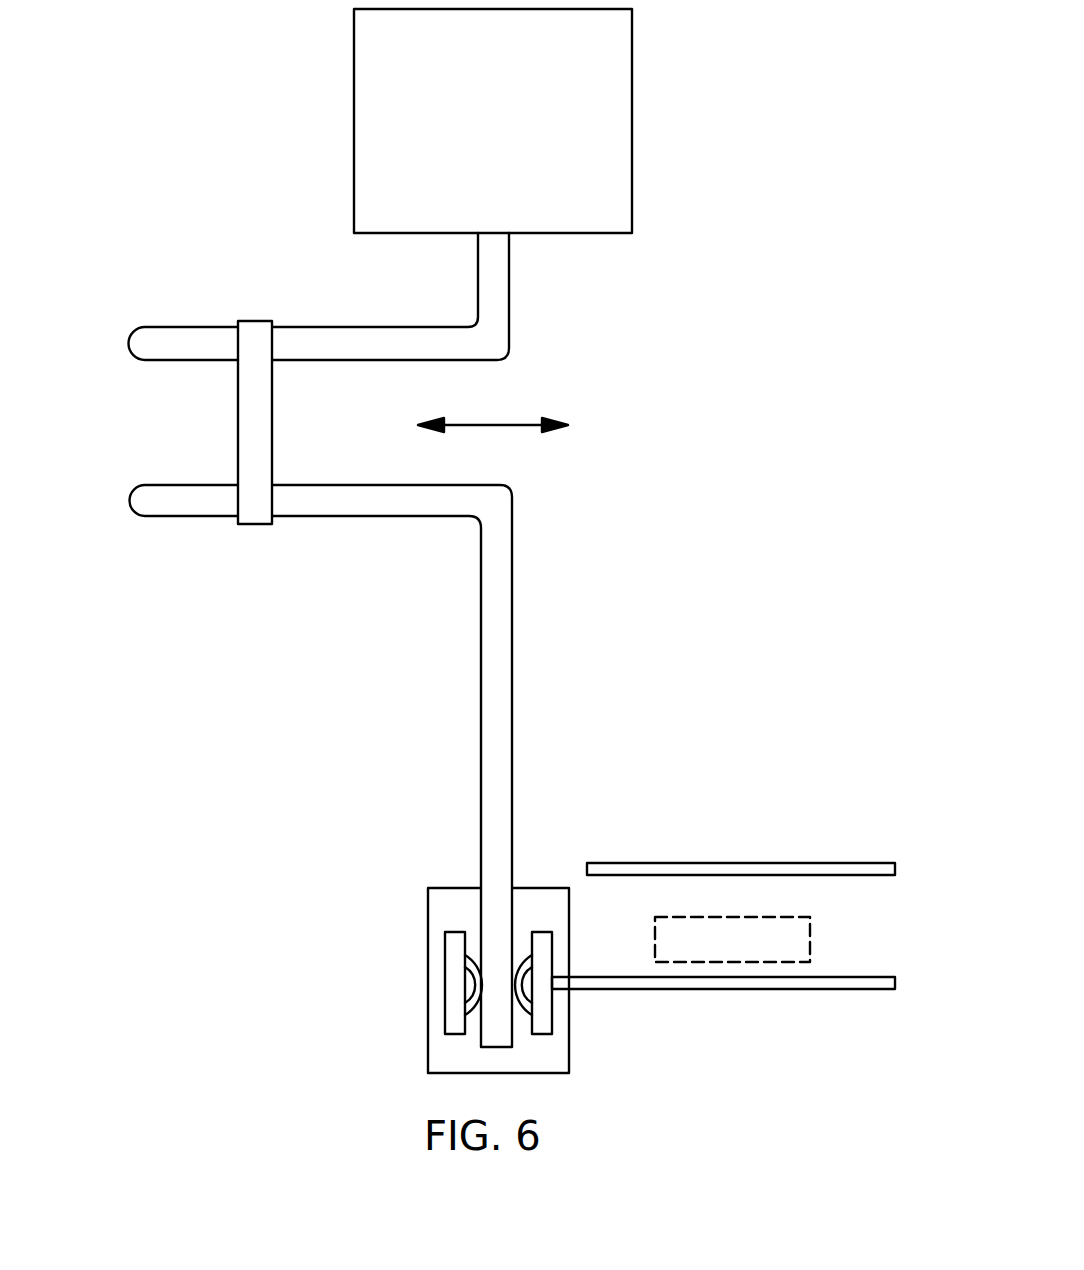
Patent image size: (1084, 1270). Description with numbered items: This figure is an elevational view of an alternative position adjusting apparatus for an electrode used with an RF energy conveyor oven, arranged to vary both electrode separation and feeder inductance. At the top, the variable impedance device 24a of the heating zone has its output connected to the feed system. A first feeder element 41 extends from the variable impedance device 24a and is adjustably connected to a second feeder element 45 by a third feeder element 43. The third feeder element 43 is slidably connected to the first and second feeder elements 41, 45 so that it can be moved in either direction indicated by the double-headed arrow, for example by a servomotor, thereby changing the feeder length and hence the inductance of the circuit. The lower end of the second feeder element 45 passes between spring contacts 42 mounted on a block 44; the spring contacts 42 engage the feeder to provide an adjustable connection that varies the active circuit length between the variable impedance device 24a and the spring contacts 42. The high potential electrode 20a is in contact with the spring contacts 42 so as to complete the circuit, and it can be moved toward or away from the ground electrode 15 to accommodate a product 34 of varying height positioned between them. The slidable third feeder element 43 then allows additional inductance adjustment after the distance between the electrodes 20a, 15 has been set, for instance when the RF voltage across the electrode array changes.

The variable impedance device 24a is at (517, 128).
The first feeder element 41 is at (493, 336).
The third feeder element 43 is at (257, 424).
The second feeder element 45 is at (490, 595).
The spring contacts 42 is at (455, 950).
The block 44 is at (547, 1048).
The high potential electrode 20a is at (830, 982).
The ground electrode 15 is at (775, 867).
The product 34 is at (710, 945).